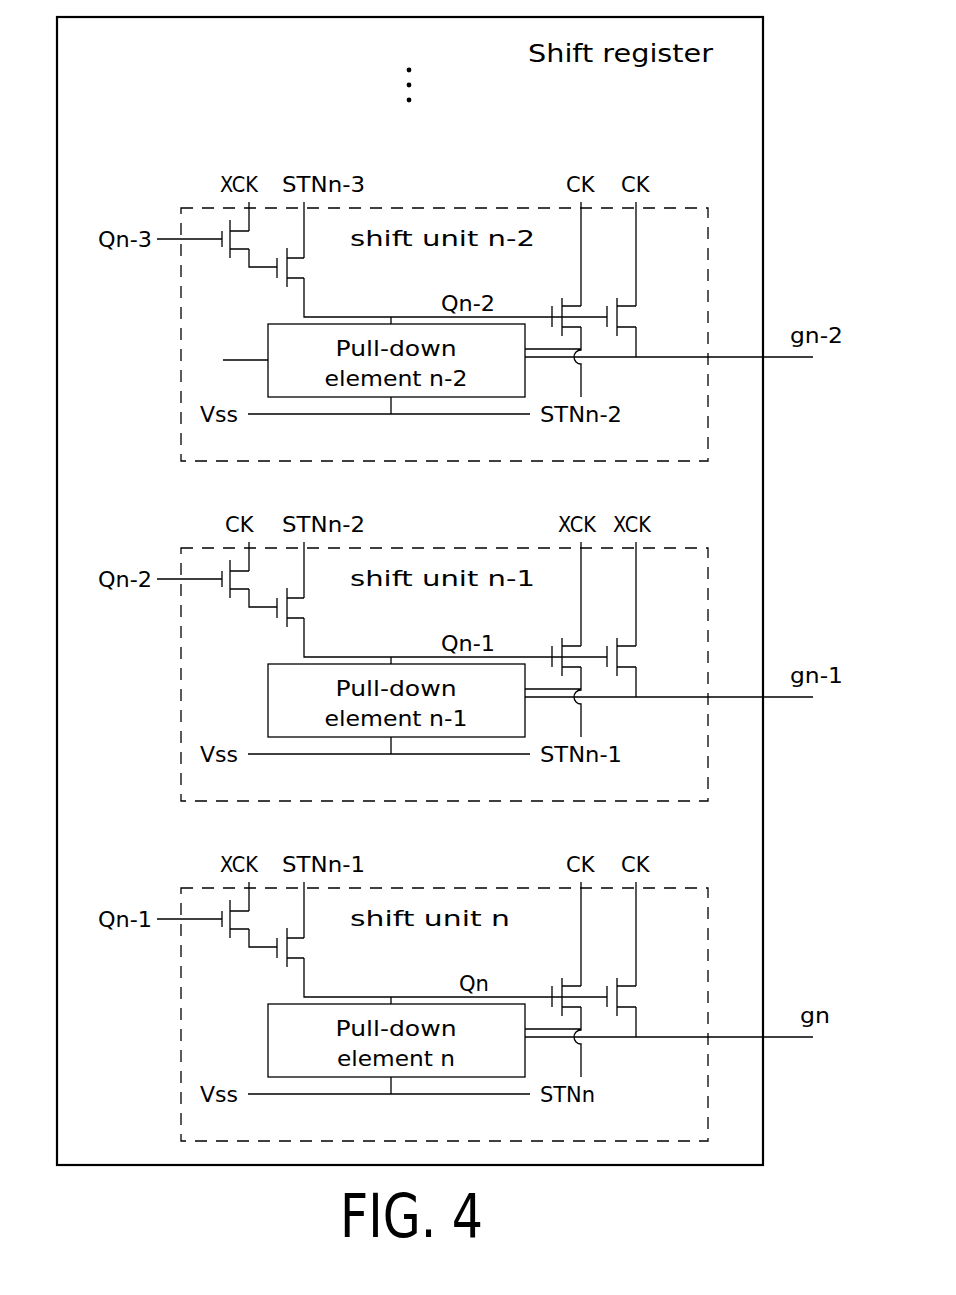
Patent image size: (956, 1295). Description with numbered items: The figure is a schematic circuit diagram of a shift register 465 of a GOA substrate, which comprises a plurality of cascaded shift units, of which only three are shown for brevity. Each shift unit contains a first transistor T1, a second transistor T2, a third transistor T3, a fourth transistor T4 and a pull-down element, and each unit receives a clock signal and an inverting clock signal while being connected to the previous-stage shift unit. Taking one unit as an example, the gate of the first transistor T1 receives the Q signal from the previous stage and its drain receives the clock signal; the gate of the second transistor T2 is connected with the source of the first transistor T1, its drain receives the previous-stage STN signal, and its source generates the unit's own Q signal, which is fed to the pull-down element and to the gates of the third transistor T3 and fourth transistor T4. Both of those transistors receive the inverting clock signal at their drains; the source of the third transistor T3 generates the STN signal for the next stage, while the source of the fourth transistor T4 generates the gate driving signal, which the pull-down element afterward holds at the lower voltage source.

The shift register 465 is at (735, 31).
The first transistor T1 is at (245, 579).
The second transistor T2 is at (304, 607).
The third transistor T3 is at (560, 644).
The fourth transistor T4 is at (617, 644).